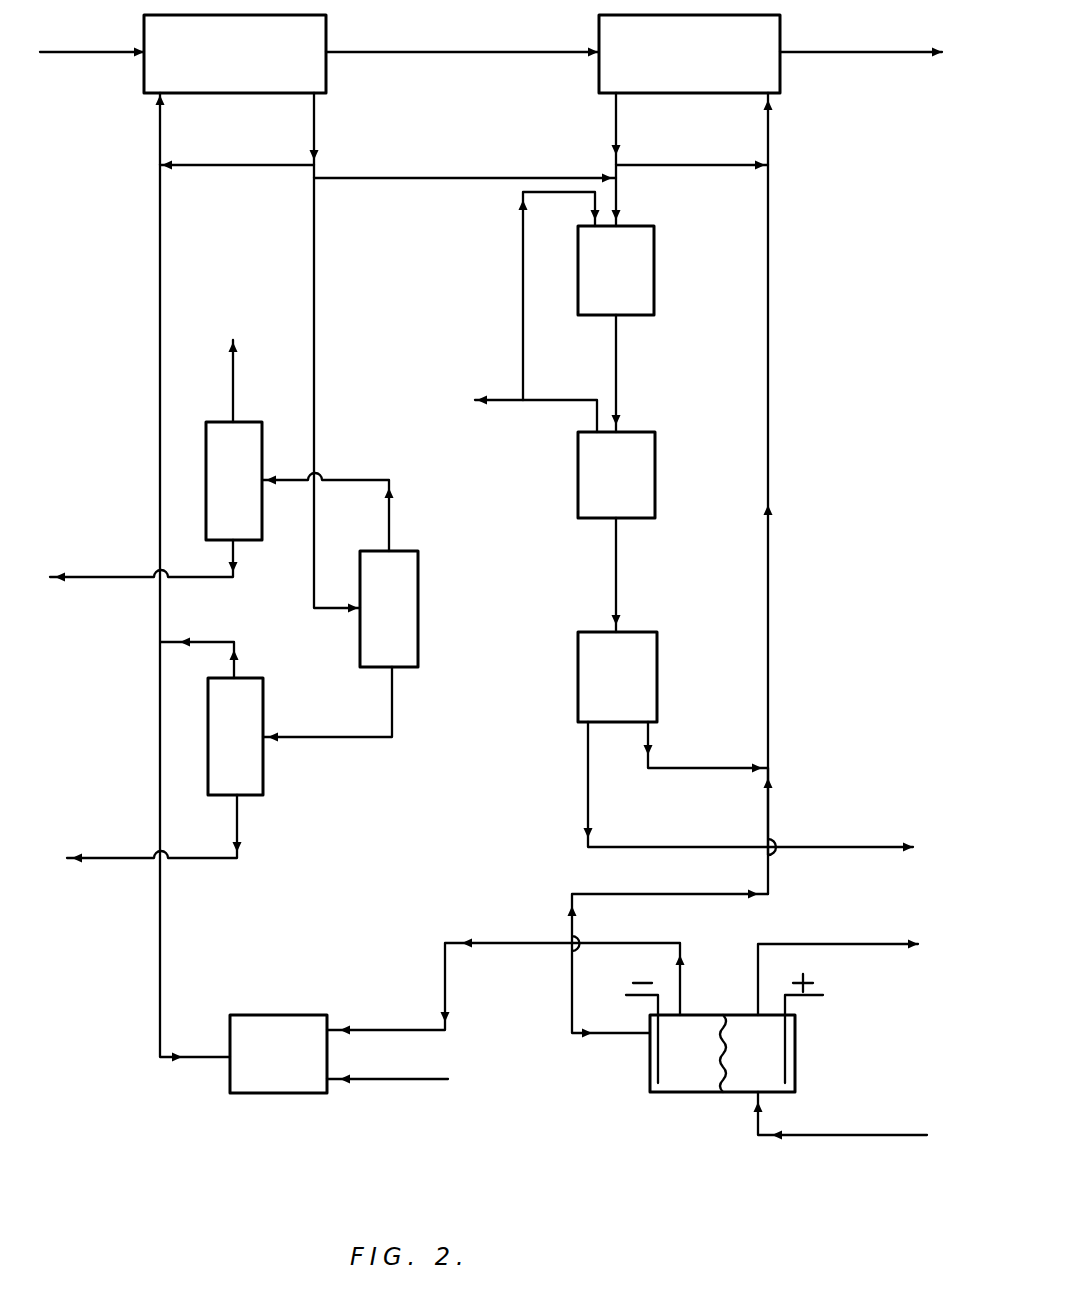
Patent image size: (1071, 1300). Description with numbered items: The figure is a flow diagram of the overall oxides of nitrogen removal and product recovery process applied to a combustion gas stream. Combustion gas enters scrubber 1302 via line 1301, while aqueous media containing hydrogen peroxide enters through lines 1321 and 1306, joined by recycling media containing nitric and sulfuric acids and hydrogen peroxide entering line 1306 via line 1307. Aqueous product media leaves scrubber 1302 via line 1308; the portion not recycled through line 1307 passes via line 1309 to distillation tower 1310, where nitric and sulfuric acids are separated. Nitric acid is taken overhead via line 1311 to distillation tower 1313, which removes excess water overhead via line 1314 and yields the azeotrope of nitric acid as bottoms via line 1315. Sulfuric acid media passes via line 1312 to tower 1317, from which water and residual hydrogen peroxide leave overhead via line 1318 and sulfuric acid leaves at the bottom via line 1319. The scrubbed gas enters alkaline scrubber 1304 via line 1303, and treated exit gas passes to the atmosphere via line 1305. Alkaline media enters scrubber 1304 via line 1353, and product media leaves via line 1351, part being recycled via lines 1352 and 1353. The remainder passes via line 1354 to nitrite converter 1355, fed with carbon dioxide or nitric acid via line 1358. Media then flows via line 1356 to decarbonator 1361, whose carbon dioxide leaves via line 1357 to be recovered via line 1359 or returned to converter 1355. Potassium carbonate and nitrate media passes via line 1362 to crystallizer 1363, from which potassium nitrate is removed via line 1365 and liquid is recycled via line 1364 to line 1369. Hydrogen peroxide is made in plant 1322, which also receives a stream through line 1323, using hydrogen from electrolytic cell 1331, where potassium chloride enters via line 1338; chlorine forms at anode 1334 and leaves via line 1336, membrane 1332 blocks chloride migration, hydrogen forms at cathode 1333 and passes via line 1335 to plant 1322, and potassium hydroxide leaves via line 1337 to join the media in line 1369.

The line 1301 is at (79, 34).
The scrubber 1302 is at (250, 66).
The line 1303 is at (478, 36).
The alkaline scrubber 1304 is at (714, 66).
The line 1305 is at (882, 34).
The line 1306 is at (160, 150).
The line 1307 is at (243, 169).
The line 1308 is at (314, 128).
The line 1309 is at (314, 292).
The distillation tower 1310 is at (400, 602).
The line 1311 is at (389, 513).
The line 1312 is at (392, 697).
The distillation tower 1313 is at (240, 482).
The line 1314 is at (233, 388).
The line 1315 is at (233, 555).
The tower 1317 is at (246, 731).
The line 1318 is at (216, 616).
The line 1319 is at (237, 820).
The line 1321 is at (160, 328).
The plant 1322 is at (292, 1069).
The makeup feed line 1323 is at (400, 1080).
The electrolytic cell 1331 is at (678, 1078).
The permselective cationic exchange membrane 1332 is at (733, 1078).
The cathode 1333 is at (658, 1035).
The anode 1334 is at (785, 1040).
The line 1335 is at (401, 1014).
The line 1336 is at (868, 926).
The line 1337 is at (768, 802).
The line 1338 is at (868, 1136).
The line 1351 is at (614, 118).
The line 1352 is at (697, 146).
The line 1353 is at (768, 130).
The line 1354 is at (616, 193).
The nitrite converter 1355 is at (634, 290).
The line 1356 is at (616, 345).
The line 1357 is at (558, 400).
The line 1358 is at (523, 243).
The line 1359 is at (510, 402).
The decarbonator 1361 is at (624, 490).
The line 1362 is at (616, 565).
The crystallizer 1363 is at (634, 690).
The line 1364 is at (648, 738).
The line 1365 is at (588, 800).
The line 1369 is at (768, 612).